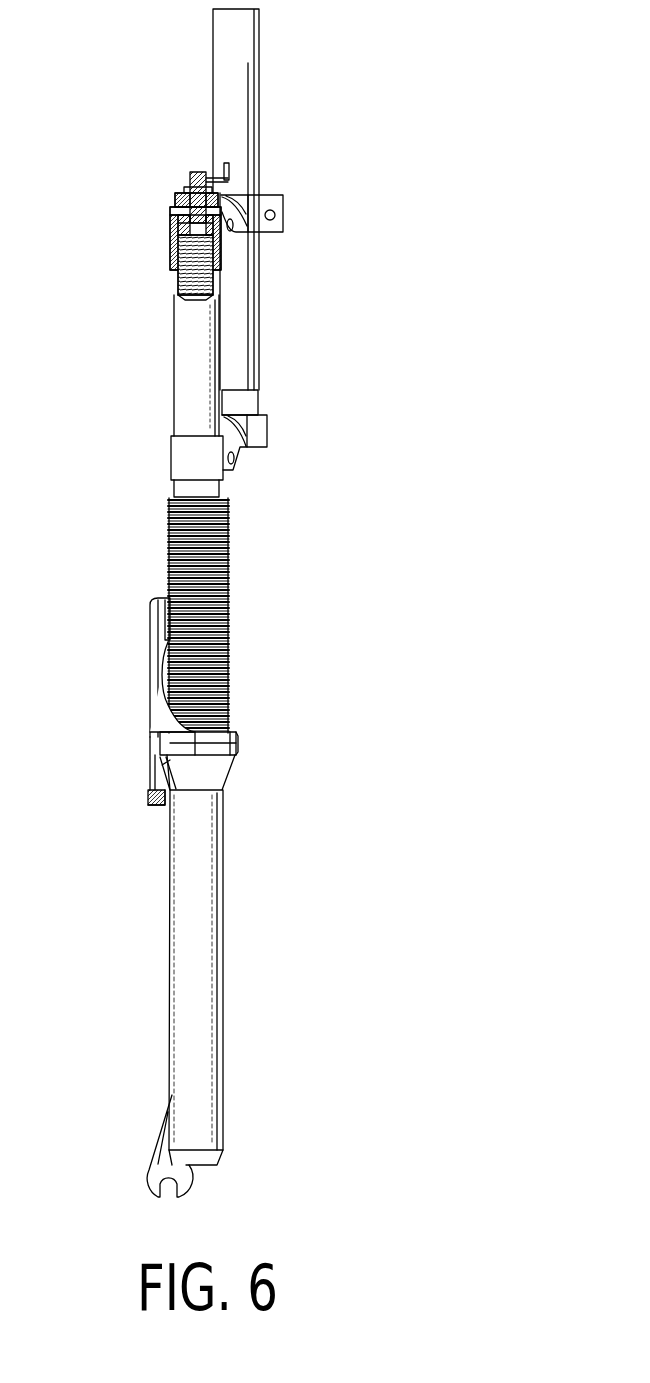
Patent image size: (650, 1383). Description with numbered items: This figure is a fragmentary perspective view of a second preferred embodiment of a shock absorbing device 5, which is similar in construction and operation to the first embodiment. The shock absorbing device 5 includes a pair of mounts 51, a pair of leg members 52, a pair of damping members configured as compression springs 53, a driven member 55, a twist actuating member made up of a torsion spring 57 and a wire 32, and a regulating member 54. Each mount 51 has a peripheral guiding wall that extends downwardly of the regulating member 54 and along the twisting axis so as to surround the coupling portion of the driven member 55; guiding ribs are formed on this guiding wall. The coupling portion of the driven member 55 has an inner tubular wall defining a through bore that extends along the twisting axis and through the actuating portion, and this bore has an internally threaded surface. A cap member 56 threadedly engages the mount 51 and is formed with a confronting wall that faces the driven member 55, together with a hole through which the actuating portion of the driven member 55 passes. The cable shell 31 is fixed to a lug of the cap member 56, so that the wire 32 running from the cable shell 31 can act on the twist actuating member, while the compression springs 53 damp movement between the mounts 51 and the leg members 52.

The shock absorbing device 5 is at (171, 465).
The cable shell 31 is at (210, 172).
The wire 32 is at (228, 177).
The mount 51 is at (174, 377).
The leg member 52 is at (223, 930).
The compression spring 53 is at (178, 278).
The regulating member 54 is at (176, 206).
The driven member 55 is at (189, 172).
The cap member 56 is at (185, 188).
The torsion spring 57 is at (188, 182).